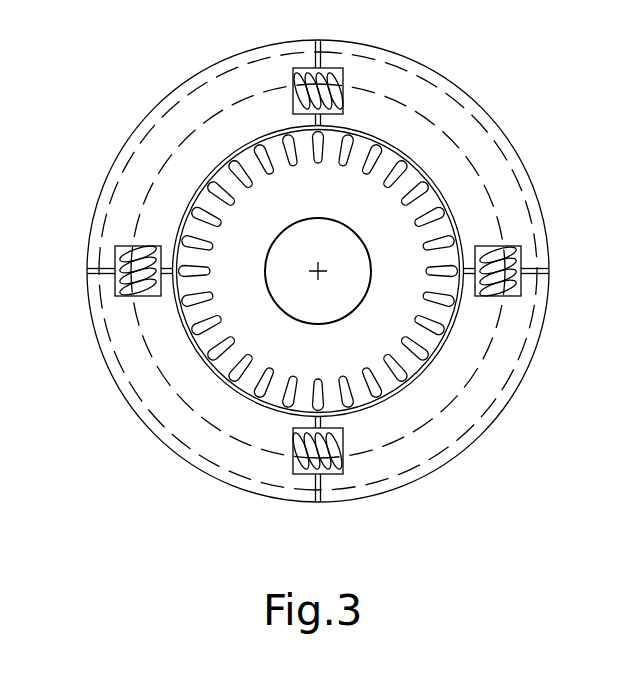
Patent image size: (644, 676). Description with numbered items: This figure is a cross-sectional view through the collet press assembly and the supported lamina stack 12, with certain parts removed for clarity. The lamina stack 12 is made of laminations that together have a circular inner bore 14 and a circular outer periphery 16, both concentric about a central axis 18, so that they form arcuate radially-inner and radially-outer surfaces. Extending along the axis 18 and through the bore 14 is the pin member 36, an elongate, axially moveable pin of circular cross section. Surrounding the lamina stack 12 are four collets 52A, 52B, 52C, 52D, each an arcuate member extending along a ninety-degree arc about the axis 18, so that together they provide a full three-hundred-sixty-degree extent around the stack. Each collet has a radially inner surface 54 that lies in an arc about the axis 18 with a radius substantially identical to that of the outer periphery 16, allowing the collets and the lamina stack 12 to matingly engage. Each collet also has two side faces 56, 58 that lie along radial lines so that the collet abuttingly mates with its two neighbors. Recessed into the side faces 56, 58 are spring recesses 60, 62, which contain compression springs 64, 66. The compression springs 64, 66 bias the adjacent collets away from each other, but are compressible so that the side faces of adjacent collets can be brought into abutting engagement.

The lamina stack 12 is at (392, 226).
The inner bore 14 is at (334, 222).
The outer periphery 16 is at (375, 136).
The axis 18 is at (324, 271).
The pin member 36 is at (331, 307).
The collet 52A is at (166, 456).
The collet 52B is at (472, 456).
The collet 52C is at (471, 88).
The collet 52D is at (166, 88).
The radially inner surface 54 is at (212, 368).
The side face 56 is at (88, 270).
The side face 58 is at (318, 502).
The spring recess 60 is at (117, 286).
The spring recess 62 is at (305, 474).
The compression spring 64 is at (120, 250).
The compression spring 66 is at (340, 474).